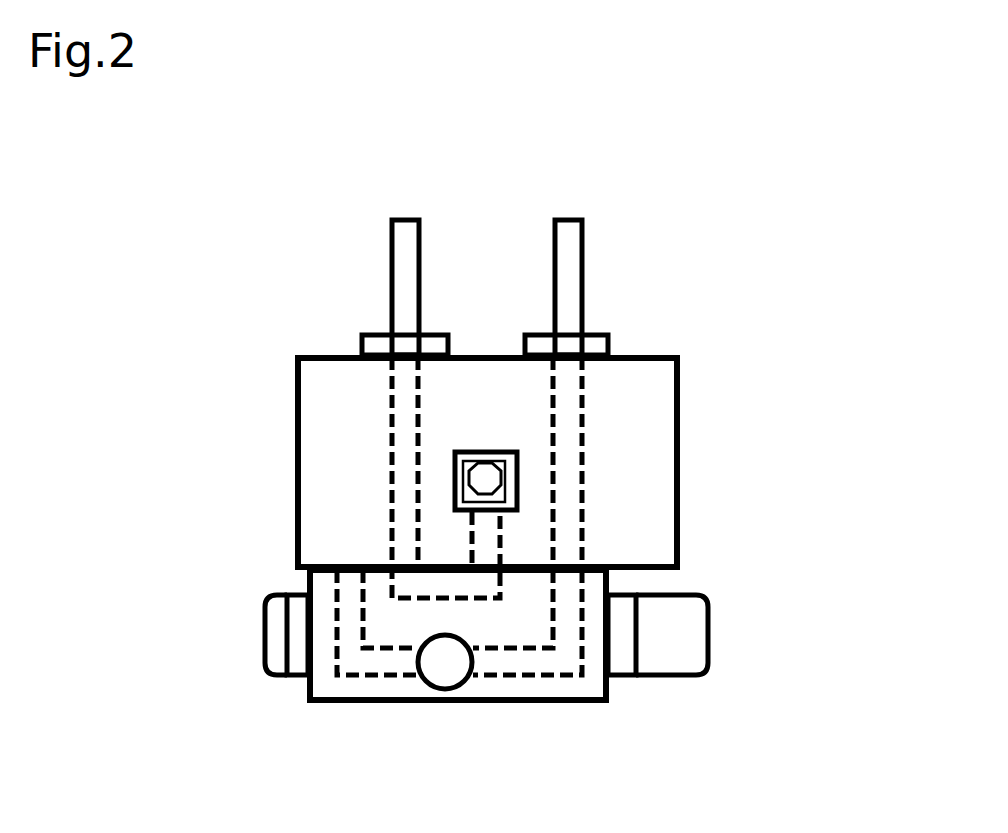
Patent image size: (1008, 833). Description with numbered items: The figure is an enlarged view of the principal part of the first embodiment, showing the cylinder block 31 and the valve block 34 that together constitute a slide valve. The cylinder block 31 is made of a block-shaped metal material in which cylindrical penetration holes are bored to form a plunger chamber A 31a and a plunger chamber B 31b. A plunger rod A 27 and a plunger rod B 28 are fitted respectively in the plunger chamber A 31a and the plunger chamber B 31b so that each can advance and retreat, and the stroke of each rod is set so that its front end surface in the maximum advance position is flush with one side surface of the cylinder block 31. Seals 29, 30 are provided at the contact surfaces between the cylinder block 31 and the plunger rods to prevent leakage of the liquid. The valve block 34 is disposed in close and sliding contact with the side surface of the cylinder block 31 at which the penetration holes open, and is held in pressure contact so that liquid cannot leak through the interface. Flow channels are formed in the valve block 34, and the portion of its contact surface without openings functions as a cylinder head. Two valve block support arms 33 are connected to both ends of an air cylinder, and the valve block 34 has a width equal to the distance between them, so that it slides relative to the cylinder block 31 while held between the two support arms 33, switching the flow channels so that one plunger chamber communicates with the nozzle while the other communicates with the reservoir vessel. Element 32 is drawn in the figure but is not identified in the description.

The plunger rod A 27 is at (388, 265).
The plunger rod B 28 is at (585, 258).
The seal 29 is at (360, 342).
The seal 30 is at (612, 345).
The cylinder block 31 is at (680, 537).
The plunger chamber A 31a is at (304, 477).
The plunger chamber B 31b is at (722, 449).
The connection terminal 32 is at (668, 486).
The valve block support arm 33 is at (697, 643).
The valve block 34 is at (535, 705).